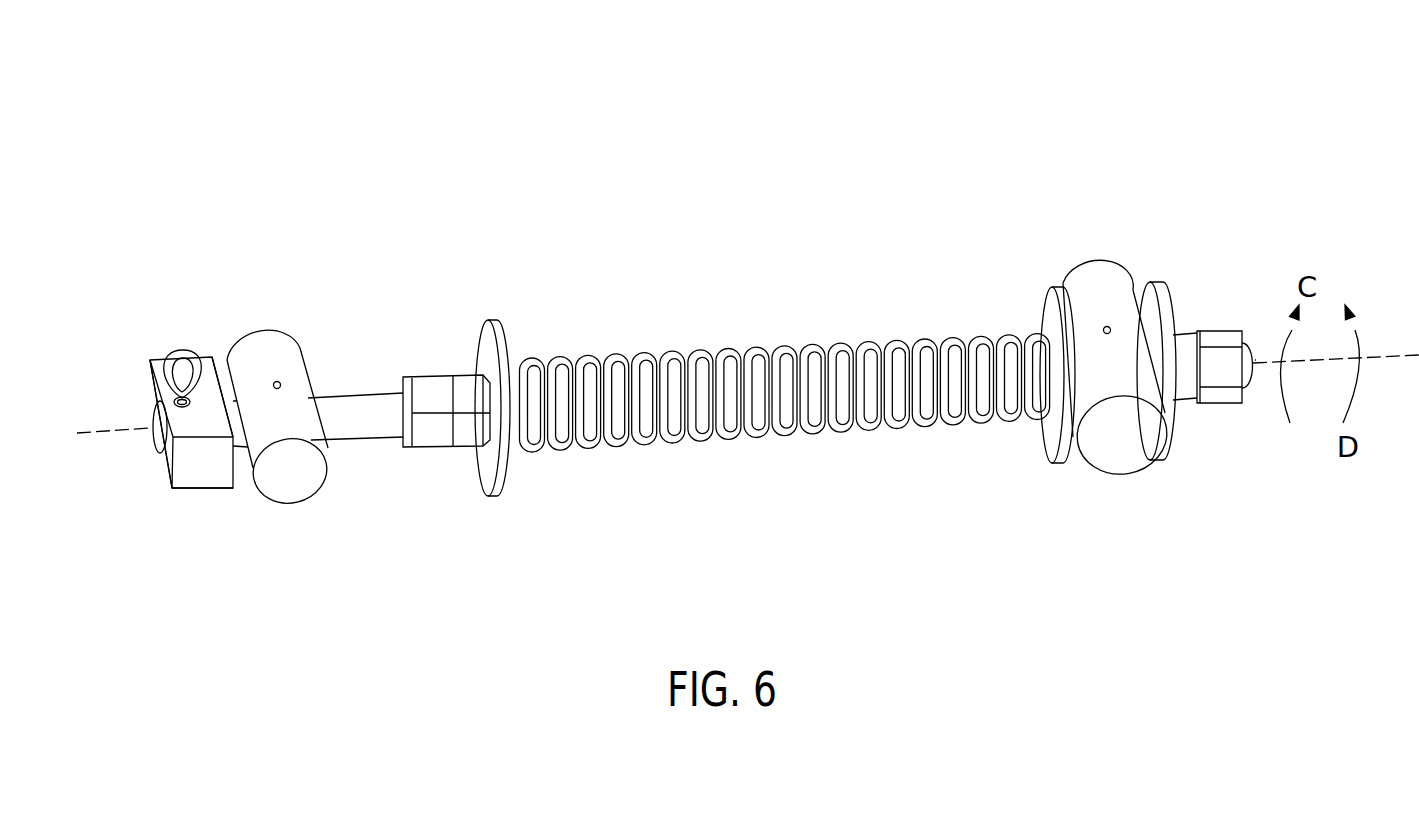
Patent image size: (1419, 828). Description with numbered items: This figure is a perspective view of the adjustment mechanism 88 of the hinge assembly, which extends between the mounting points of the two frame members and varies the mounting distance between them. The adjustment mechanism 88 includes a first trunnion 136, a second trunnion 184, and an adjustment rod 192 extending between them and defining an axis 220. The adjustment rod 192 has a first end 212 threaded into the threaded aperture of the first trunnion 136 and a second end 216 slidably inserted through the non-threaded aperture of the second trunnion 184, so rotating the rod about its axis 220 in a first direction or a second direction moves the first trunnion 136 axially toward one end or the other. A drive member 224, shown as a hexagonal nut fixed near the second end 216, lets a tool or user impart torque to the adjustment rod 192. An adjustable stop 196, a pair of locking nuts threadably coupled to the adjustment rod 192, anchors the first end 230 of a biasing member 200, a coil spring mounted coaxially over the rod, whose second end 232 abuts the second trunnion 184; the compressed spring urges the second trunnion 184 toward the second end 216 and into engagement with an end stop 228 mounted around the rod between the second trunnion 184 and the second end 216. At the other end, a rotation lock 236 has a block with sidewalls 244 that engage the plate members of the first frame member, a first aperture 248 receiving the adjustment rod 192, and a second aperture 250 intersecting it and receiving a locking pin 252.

The adjustment mechanism 88 is at (1130, 136).
The first trunnion 136 is at (278, 357).
The second trunnion 184 is at (1118, 447).
The adjustment rod 192 is at (355, 412).
The adjustable stop 196 is at (440, 392).
The biasing member 200 is at (672, 350).
The first end 212 is at (158, 417).
The second end 216 is at (1248, 350).
The axis 220 is at (1377, 357).
The drive member 224 is at (1210, 342).
The end stop 228 is at (1152, 287).
The first end 230 is at (505, 363).
The second end 232 is at (1038, 330).
The rotation lock 236 is at (187, 475).
The sidewalls 244 is at (207, 357).
The first aperture 248 is at (167, 460).
The second aperture 250 is at (192, 402).
The locking pin 252 is at (167, 357).